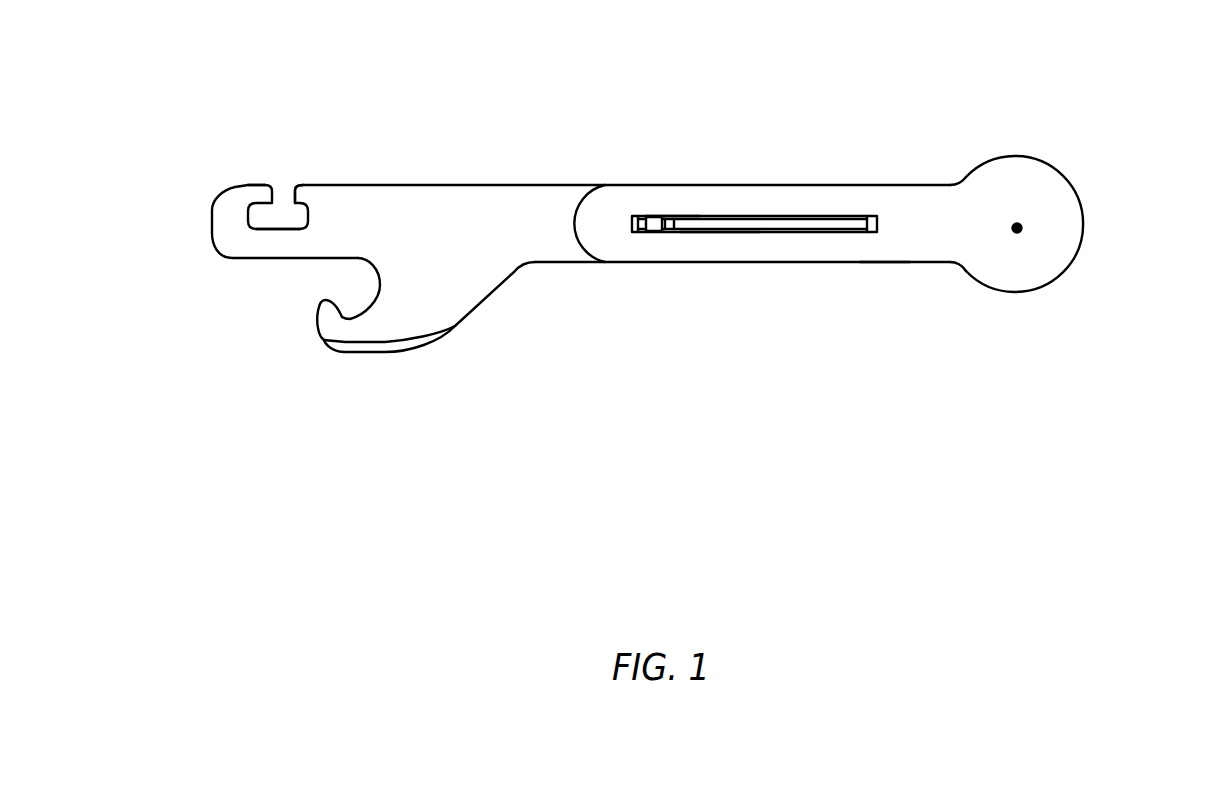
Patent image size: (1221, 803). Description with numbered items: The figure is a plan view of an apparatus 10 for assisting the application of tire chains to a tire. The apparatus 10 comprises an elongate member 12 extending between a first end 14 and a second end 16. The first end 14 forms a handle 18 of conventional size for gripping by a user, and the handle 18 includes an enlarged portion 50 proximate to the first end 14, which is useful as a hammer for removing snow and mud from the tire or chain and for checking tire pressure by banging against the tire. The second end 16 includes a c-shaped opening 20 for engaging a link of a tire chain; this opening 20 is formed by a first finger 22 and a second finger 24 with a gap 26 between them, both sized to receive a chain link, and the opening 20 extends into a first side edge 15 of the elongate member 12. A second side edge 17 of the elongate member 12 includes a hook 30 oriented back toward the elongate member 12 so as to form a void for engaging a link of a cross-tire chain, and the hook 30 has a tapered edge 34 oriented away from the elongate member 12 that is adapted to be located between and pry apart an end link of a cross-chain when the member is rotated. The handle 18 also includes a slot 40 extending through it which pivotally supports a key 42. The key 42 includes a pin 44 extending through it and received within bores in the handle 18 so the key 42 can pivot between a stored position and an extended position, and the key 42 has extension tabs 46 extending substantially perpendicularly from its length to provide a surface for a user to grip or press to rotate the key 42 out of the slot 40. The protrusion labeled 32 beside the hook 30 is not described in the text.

The apparatus 10 is at (730, 62).
The elongate member 12 is at (634, 216).
The first end 14 is at (1072, 185).
The first side edge 15 is at (563, 185).
The second end 16 is at (219, 198).
The second side edge 17 is at (572, 263).
The handle 18 is at (885, 268).
The c-shaped opening 20 is at (276, 152).
The first finger 22 is at (251, 194).
The second finger 24 is at (302, 192).
The gap 26 is at (288, 227).
The hook 30 is at (322, 301).
The protrusion 32 is at (369, 265).
The tapered edge 34 is at (394, 368).
The slot 40 is at (872, 215).
The key 42 is at (713, 232).
The pin 44 is at (657, 233).
The extension tabs 46 is at (668, 215).
The enlarged portion 50 is at (1017, 228).